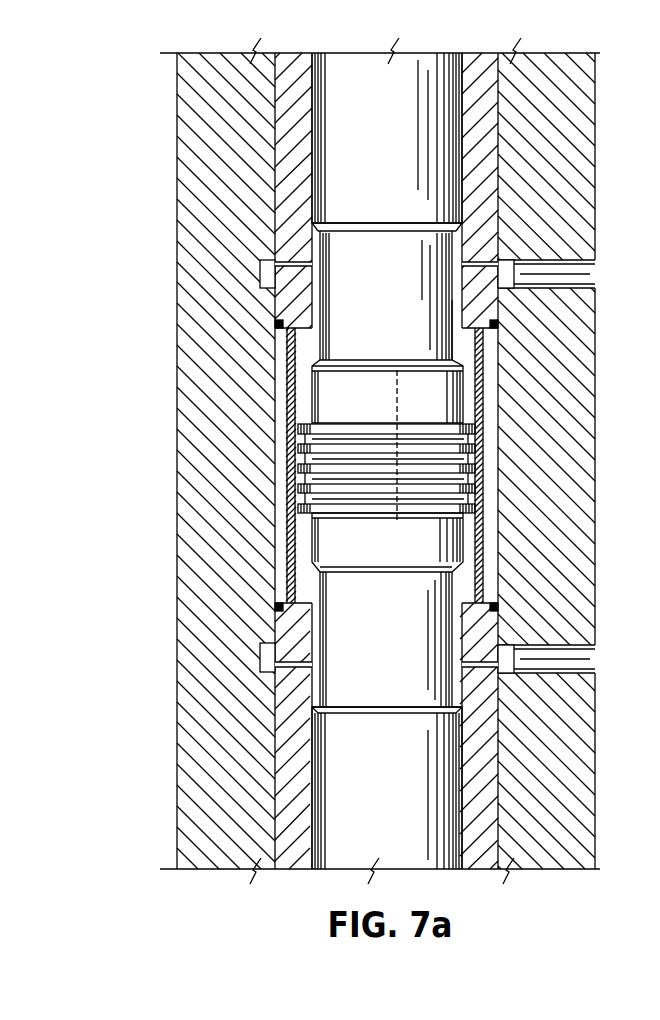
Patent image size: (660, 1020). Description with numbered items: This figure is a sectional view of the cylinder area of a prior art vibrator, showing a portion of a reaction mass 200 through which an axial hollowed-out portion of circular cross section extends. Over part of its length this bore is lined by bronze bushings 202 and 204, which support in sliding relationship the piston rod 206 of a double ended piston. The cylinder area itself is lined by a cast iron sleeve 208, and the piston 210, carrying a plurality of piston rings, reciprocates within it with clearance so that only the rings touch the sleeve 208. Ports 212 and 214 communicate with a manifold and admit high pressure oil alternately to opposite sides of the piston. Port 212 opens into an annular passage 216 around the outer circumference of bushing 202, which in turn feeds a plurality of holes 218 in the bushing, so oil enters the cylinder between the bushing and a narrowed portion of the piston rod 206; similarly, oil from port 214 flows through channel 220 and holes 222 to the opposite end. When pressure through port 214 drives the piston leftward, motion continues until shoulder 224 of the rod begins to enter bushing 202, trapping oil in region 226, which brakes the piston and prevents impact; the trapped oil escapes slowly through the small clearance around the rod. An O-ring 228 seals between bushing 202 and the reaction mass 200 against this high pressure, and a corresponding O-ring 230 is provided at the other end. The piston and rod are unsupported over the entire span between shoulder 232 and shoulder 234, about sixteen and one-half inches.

The reaction mass 200 is at (177, 523).
The bronze bushing 202 is at (468, 80).
The bronze bushing 204 is at (470, 752).
The piston rod 206 is at (362, 135).
The sleeve 208 is at (487, 548).
The piston 210 is at (365, 404).
The port 212 is at (598, 276).
The port 214 is at (598, 661).
The annular passage 216 is at (283, 262).
The holes 218 is at (308, 268).
The channel 220 is at (262, 645).
The holes 222 is at (307, 668).
The shoulder 224 is at (391, 363).
The region 226 is at (455, 302).
The O-ring 228 is at (283, 328).
The O-ring 230 is at (278, 604).
The shoulder 232 is at (378, 222).
The shoulder 234 is at (378, 707).